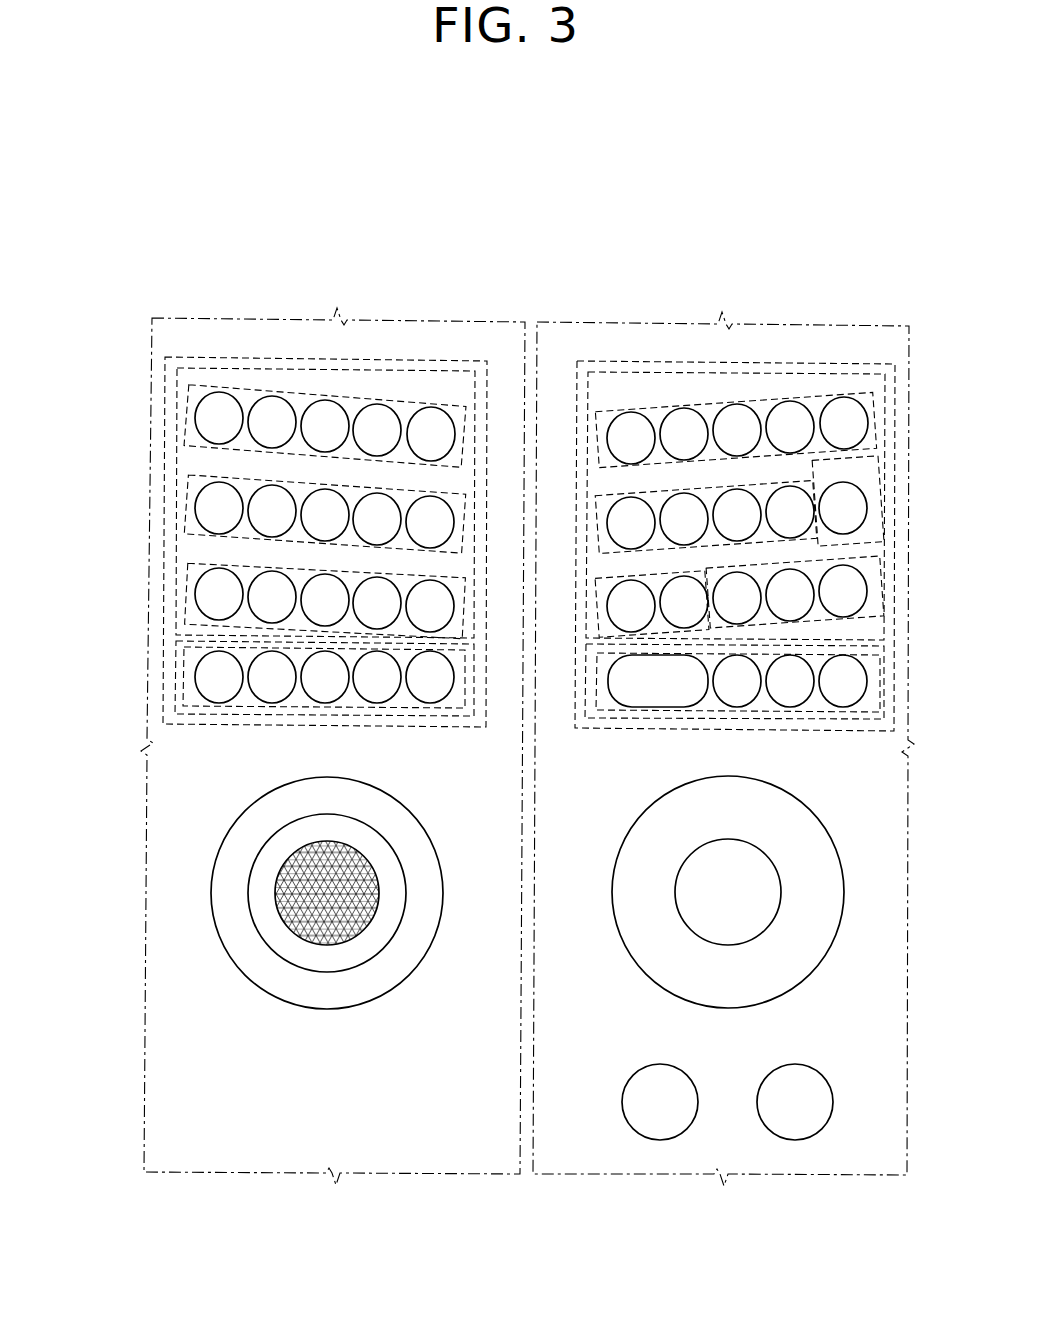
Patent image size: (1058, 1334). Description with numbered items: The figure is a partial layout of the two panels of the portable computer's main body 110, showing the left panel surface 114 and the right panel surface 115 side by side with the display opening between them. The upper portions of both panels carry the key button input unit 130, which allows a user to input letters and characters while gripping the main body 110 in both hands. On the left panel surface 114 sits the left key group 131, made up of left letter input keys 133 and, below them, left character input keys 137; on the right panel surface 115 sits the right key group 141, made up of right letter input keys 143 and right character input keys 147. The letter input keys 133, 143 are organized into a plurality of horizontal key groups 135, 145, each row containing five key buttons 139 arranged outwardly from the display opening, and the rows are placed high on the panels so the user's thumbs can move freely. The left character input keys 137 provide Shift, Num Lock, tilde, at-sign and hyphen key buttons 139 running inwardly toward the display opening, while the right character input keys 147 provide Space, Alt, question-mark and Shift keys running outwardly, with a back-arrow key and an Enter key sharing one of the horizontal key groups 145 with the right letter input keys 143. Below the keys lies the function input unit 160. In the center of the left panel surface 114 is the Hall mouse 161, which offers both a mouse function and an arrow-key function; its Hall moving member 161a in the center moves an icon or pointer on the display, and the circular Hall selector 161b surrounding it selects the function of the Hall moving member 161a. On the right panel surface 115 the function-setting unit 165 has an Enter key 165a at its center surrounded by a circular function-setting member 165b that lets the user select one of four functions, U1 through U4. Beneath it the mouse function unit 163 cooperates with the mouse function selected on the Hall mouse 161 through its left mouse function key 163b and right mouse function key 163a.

The main body 110 is at (527, 798).
The left panel surface 114 is at (430, 1176).
The right panel surface 115 is at (723, 778).
The key button input unit 130 is at (527, 515).
The left key group 131 is at (214, 357).
The left letter input keys 133 is at (301, 368).
The horizontal key groups 135 is at (188, 416).
The left character input keys 137 is at (400, 715).
The key buttons 139 is at (445, 495).
The right key group 141 is at (845, 357).
The right letter input keys 143 is at (628, 362).
The horizontal key groups 145 is at (866, 416).
The right character input keys 147 is at (622, 730).
The function input unit 160 is at (639, 958).
The Hall mouse 161 is at (241, 892).
The Hall moving member 161a is at (270, 907).
The Hall selector 161b is at (235, 847).
The mouse function unit 163 is at (660, 1080).
The right mouse function key 163a is at (760, 1075).
The left mouse function key 163b is at (632, 1094).
The function-setting unit 165 is at (666, 892).
The Enter key 165a is at (677, 873).
The function-setting member 165b is at (633, 913).